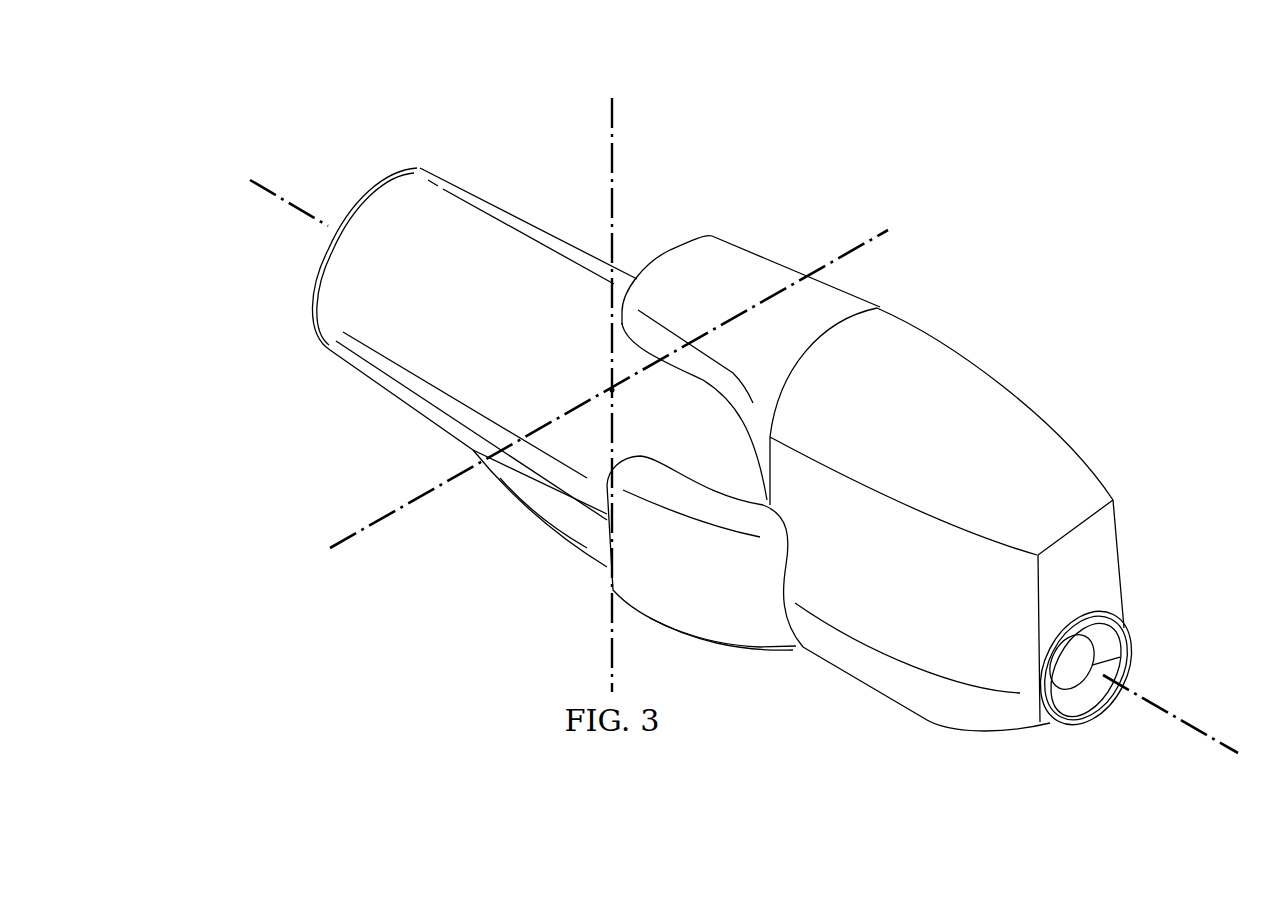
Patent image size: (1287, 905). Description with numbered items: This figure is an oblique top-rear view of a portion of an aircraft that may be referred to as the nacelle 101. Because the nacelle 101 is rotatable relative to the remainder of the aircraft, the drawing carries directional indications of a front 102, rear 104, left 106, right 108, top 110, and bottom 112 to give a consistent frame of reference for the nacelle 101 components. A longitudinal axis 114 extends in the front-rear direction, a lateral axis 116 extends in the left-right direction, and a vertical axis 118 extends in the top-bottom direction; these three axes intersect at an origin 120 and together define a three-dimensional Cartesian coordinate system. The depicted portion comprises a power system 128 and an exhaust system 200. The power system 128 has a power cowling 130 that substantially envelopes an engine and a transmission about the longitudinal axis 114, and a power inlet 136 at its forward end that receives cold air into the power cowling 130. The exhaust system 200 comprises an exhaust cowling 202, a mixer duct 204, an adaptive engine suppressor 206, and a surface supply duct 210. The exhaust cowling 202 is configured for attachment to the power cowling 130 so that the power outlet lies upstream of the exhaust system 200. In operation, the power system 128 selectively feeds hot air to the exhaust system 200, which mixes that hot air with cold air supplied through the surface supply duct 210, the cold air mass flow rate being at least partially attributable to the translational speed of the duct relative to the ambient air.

The nacelle 101 is at (1010, 122).
The front 102 is at (255, 160).
The rear 104 is at (1183, 752).
The left 106 is at (863, 222).
The right 108 is at (340, 528).
The top 110 is at (598, 86).
The bottom 112 is at (598, 612).
The longitudinal axis 114 is at (268, 189).
The lateral axis 116 is at (874, 240).
The vertical axis 118 is at (616, 116).
The origin 120 is at (608, 387).
The power system 128 is at (438, 367).
The power cowling 130 is at (540, 228).
The power inlet 136 is at (317, 286).
The exhaust system 200 is at (901, 512).
The exhaust cowling 202 is at (1125, 560).
The mixer duct 204 is at (1070, 708).
The adaptive engine suppressor 206 is at (1128, 656).
The surface supply duct 210 is at (700, 638).